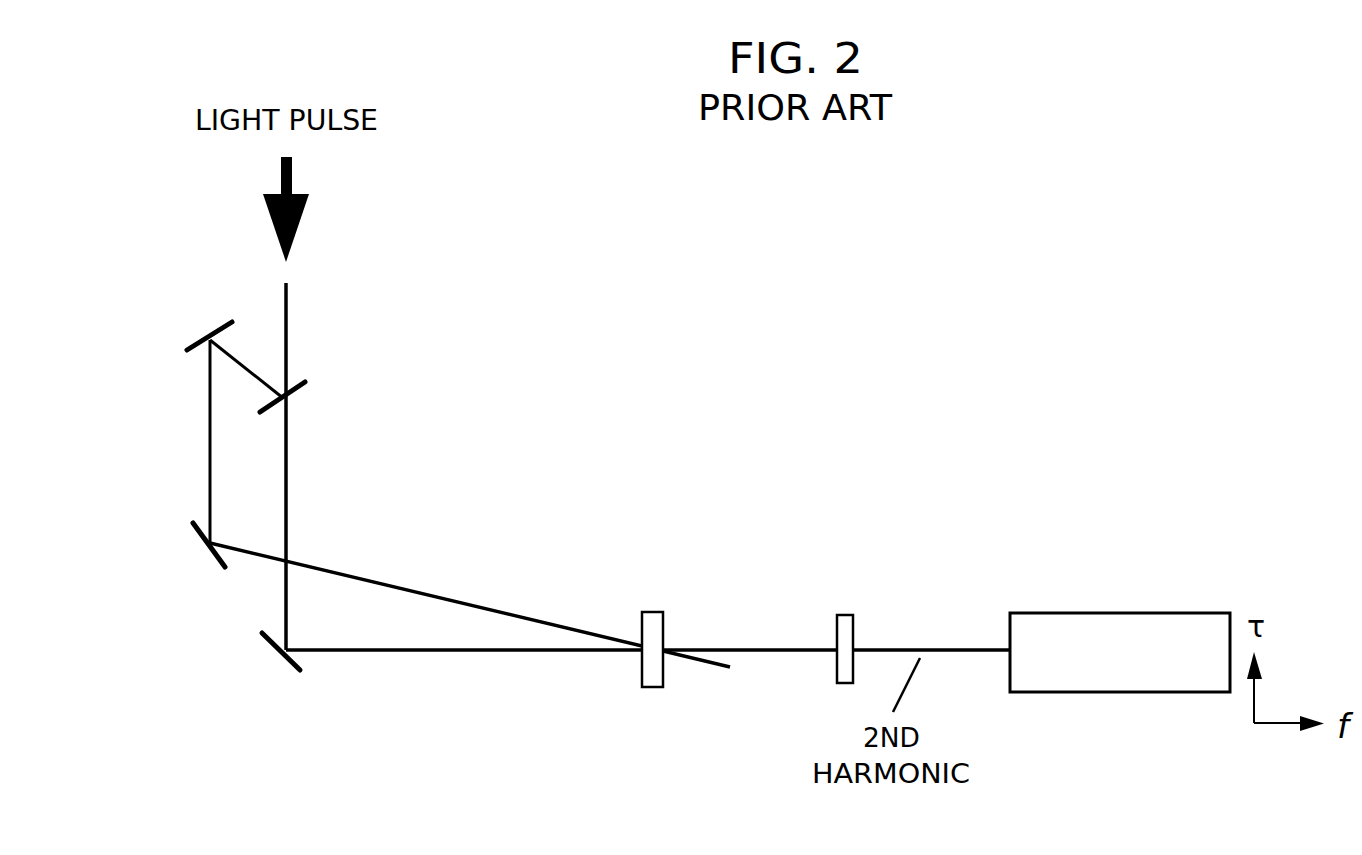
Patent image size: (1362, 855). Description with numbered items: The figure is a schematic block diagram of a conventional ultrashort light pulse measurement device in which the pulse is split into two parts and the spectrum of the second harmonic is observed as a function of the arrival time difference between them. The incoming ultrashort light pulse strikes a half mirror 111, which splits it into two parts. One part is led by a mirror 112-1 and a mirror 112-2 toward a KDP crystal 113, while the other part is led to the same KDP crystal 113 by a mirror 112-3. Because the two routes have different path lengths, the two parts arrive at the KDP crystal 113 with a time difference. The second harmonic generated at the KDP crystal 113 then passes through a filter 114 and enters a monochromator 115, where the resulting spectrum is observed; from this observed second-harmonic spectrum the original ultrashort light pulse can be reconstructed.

The half mirror 111 is at (297, 381).
The mirror 112-1 is at (186, 350).
The mirror 112-2 is at (221, 569).
The mirror 112-3 is at (286, 660).
The KDP crystal 113 is at (643, 688).
The filter 114 is at (838, 683).
The monochromator 115 is at (1098, 692).